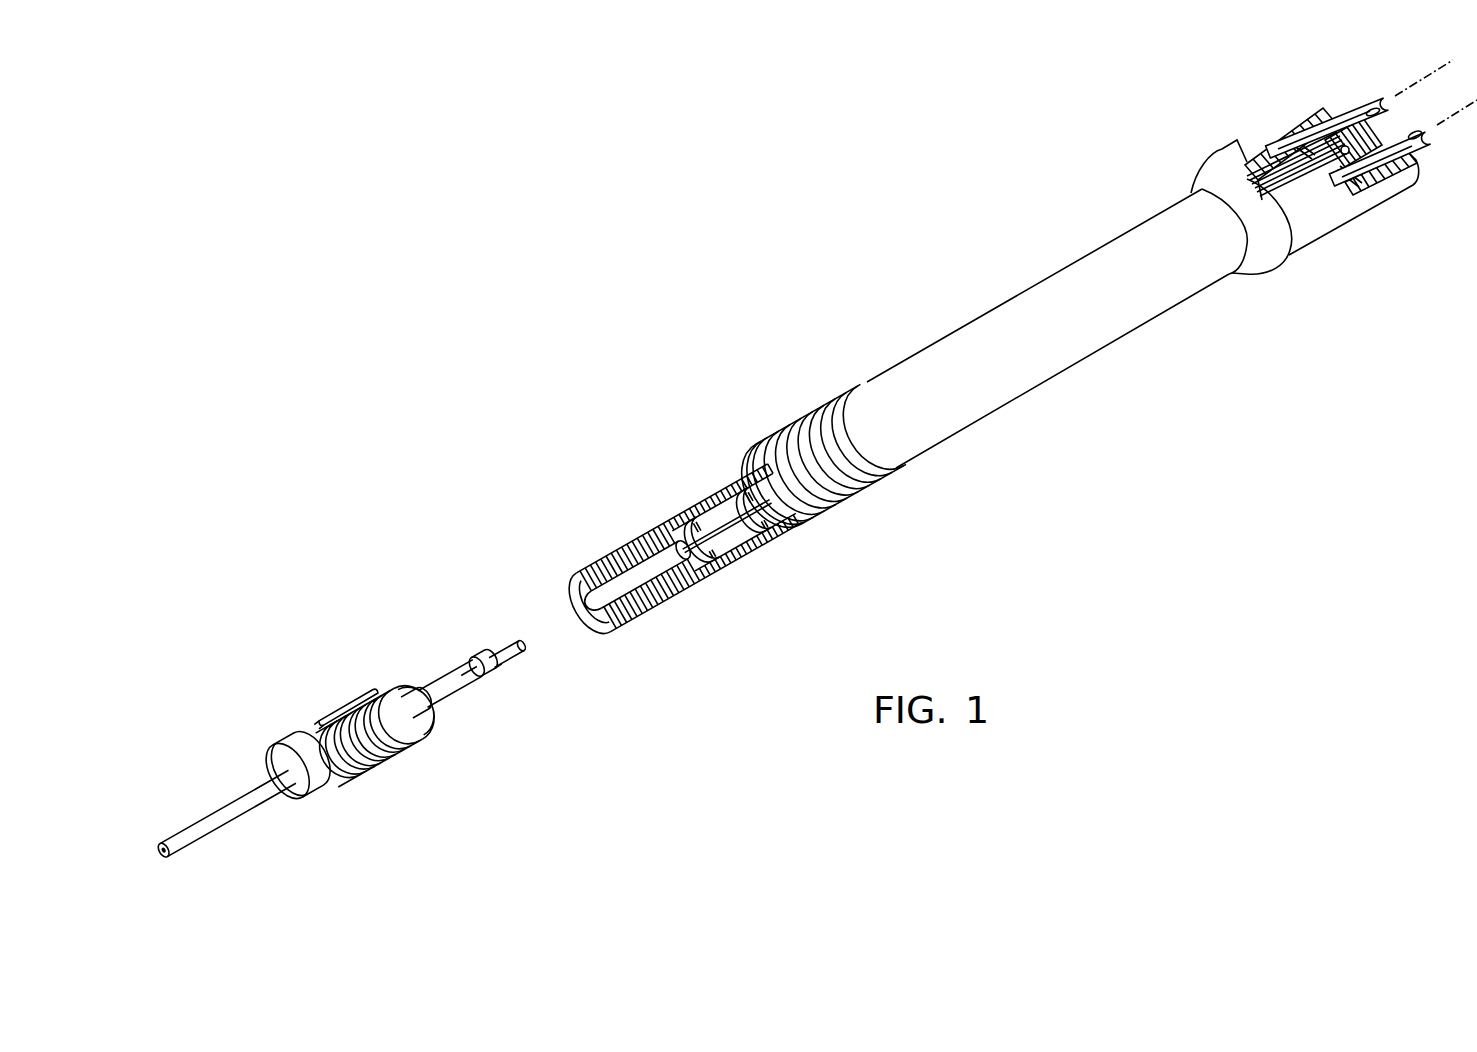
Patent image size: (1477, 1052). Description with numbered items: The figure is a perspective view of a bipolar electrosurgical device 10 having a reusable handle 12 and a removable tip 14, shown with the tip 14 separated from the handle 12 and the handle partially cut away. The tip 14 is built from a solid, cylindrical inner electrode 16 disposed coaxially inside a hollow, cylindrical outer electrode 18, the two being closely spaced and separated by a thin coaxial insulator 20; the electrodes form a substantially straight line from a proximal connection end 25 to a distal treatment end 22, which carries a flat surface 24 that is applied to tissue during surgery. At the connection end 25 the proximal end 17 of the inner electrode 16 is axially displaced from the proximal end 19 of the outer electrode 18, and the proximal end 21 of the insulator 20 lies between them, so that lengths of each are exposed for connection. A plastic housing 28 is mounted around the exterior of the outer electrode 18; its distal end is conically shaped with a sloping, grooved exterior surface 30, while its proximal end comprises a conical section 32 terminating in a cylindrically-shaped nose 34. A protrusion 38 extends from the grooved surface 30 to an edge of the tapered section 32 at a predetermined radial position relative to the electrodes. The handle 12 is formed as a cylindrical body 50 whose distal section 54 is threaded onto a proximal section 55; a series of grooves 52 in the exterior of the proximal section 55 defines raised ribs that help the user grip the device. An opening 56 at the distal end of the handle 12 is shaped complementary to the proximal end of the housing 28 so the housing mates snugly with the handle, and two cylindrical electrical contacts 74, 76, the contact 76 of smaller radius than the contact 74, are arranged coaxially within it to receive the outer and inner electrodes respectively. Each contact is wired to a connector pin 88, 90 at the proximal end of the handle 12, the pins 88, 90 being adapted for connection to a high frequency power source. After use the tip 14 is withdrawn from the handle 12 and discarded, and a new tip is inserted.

The surgical device 10 is at (1121, 127).
The reusable handle 12 is at (970, 265).
The removable tip 14 is at (298, 666).
The inner electrode 16 is at (512, 643).
The proximal end of inner electrode 17 is at (523, 648).
The outer electrode 18 is at (443, 682).
The proximal end of outer electrode 19 is at (480, 673).
The coaxial insulator 20 is at (478, 657).
The proximal end of insulator 21 is at (503, 668).
The distal treatment end 22 is at (266, 837).
The flat surface 24 is at (157, 872).
The proximal connection end 25 is at (438, 601).
The plastic housing 28 is at (280, 762).
The grooved exterior surface 30 is at (354, 797).
The conical section 32 is at (402, 735).
The cylindrically-shaped nose 34 is at (404, 690).
The protrusion 38 is at (346, 700).
The cylindrical body 50 is at (1058, 376).
The grooves 52 is at (900, 486).
The distal section 54 is at (676, 596).
The proximal section 55 is at (812, 514).
The opening 56 is at (572, 589).
The electrical contact 74 is at (690, 515).
The electrical contact 76 is at (738, 480).
The connector pin 88 is at (1368, 102).
The connector pin 90 is at (1419, 137).